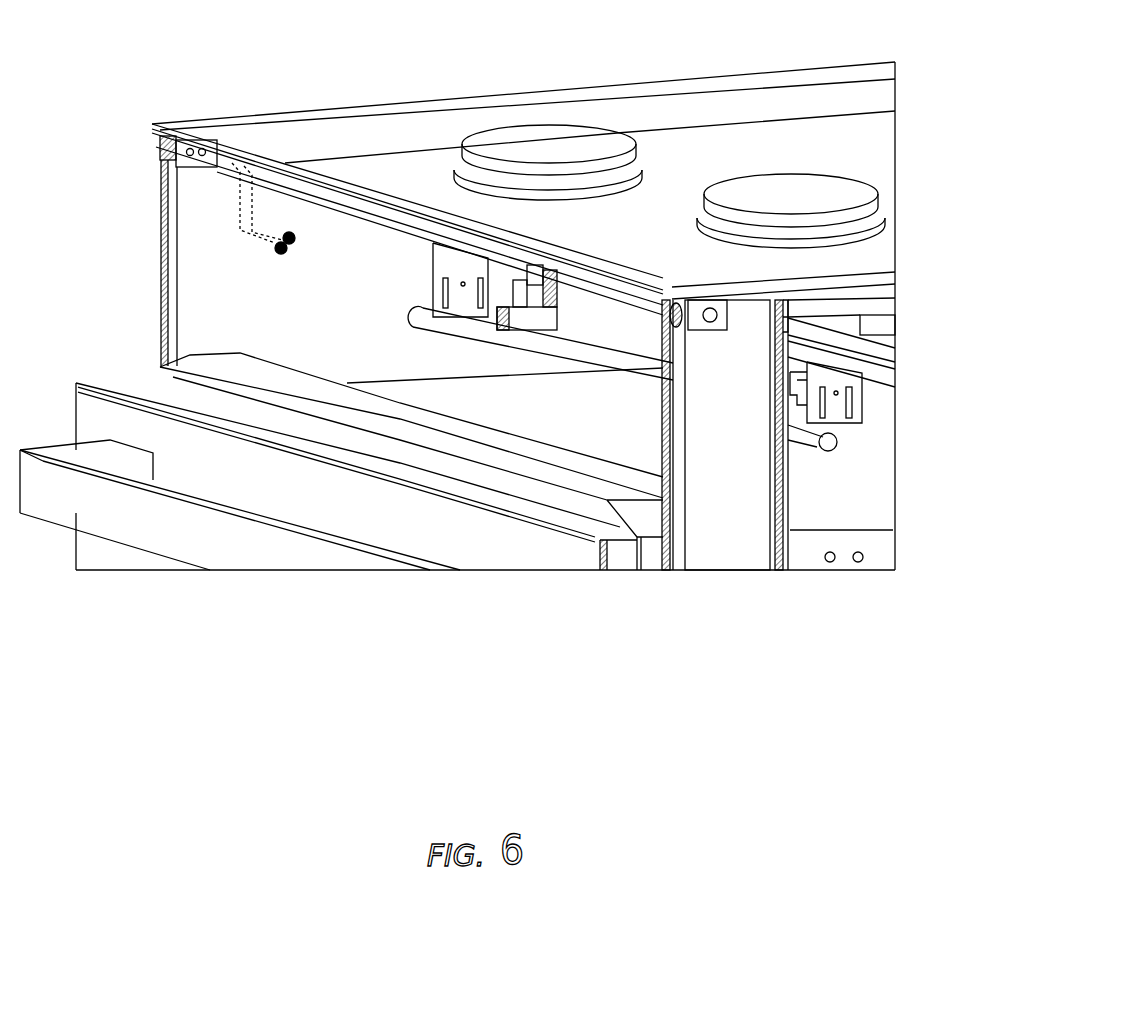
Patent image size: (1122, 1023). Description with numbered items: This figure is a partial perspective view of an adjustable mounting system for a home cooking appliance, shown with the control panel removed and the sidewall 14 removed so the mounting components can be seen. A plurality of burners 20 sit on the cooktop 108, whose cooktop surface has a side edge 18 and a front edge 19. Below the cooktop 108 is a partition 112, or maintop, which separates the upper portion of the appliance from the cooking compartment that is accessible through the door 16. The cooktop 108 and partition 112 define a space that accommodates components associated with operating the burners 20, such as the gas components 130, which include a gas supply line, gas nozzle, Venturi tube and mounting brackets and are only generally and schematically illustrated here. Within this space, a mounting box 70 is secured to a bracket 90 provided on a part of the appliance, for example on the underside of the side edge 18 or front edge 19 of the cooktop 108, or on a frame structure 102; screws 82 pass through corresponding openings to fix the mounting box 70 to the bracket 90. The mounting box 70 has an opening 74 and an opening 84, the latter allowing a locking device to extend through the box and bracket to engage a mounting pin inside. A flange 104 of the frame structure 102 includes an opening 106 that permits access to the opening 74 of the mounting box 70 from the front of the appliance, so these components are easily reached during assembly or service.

The sidewall 14 is at (353, 257).
The door 16 is at (78, 383).
The side edge 18 is at (315, 110).
The front edge 19 is at (390, 190).
The burners 20 is at (533, 126).
The mounting box 70 is at (193, 168).
The opening 74 is at (160, 150).
The screws 82 is at (289, 254).
The opening 84 is at (710, 332).
The bracket 90 is at (718, 300).
The frame structure 102 is at (740, 545).
The flange 104 is at (670, 420).
The opening 106 is at (160, 162).
The cooktop 108 is at (590, 137).
The partition 112 is at (411, 445).
The gas components 130 is at (405, 330).